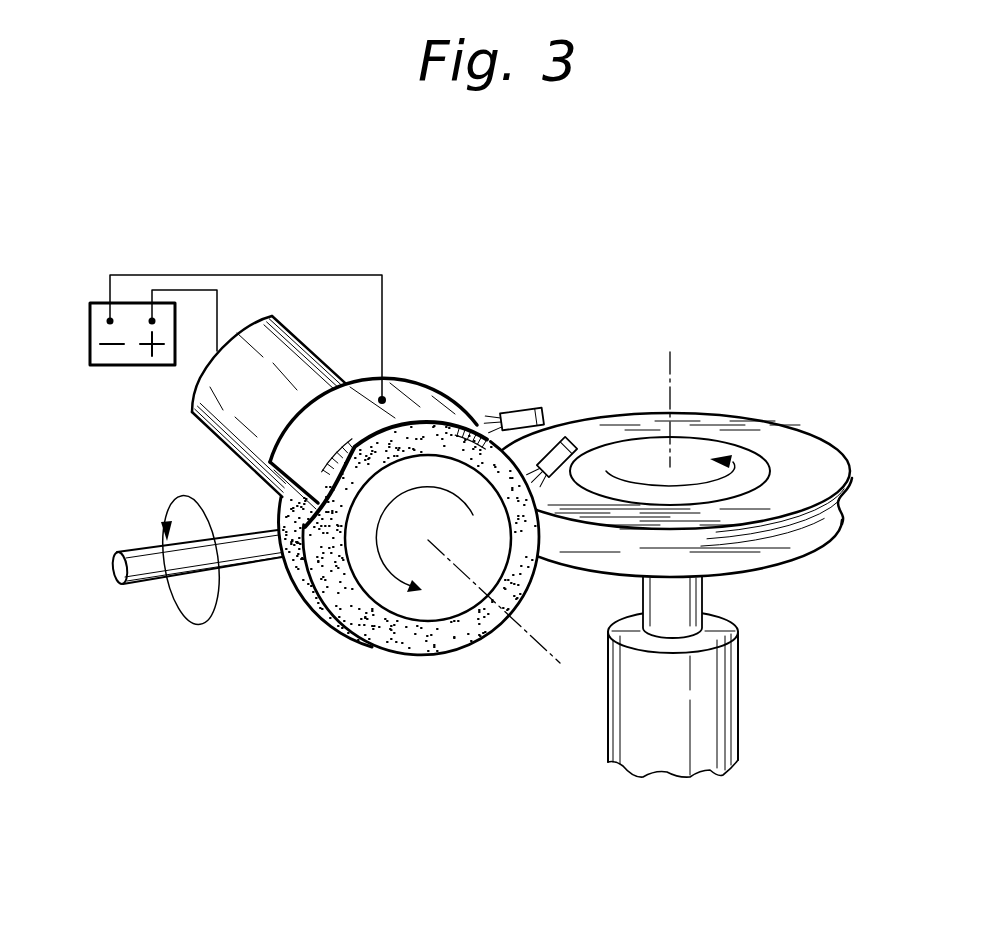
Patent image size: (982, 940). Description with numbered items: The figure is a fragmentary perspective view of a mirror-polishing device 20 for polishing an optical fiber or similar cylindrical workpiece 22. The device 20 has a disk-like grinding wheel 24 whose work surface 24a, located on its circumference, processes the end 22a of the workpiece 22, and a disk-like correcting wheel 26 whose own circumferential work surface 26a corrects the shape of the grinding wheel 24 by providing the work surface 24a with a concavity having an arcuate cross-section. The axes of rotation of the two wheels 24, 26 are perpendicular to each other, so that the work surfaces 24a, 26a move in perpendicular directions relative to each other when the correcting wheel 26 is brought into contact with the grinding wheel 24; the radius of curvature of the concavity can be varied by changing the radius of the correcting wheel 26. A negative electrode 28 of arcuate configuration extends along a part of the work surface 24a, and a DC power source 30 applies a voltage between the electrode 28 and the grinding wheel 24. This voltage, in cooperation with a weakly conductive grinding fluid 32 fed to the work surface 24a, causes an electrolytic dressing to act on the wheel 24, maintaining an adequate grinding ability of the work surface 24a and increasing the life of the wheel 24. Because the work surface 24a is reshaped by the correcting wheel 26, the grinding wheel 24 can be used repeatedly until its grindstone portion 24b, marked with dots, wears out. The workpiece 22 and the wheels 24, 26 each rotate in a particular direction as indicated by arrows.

The mirror-polishing device 20 is at (694, 294).
The workpiece 22 is at (148, 578).
The end of the workpiece 22a is at (290, 567).
The grinding wheel 24 is at (462, 662).
The work surface 24a is at (287, 524).
The grindstone portion 24b is at (385, 636).
The correcting wheel 26 is at (760, 582).
The work surface 26a is at (848, 495).
The negative electrode 28 is at (421, 402).
The DC power source 30 is at (104, 366).
The grinding fluid 32 is at (563, 436).